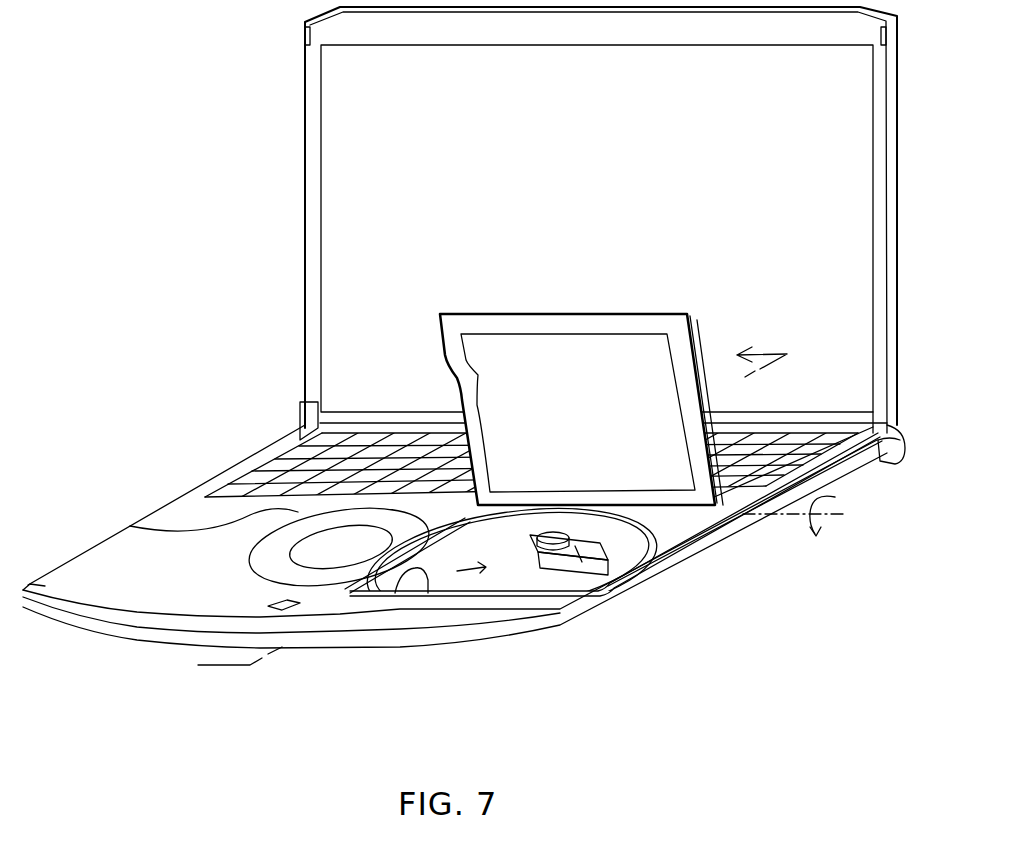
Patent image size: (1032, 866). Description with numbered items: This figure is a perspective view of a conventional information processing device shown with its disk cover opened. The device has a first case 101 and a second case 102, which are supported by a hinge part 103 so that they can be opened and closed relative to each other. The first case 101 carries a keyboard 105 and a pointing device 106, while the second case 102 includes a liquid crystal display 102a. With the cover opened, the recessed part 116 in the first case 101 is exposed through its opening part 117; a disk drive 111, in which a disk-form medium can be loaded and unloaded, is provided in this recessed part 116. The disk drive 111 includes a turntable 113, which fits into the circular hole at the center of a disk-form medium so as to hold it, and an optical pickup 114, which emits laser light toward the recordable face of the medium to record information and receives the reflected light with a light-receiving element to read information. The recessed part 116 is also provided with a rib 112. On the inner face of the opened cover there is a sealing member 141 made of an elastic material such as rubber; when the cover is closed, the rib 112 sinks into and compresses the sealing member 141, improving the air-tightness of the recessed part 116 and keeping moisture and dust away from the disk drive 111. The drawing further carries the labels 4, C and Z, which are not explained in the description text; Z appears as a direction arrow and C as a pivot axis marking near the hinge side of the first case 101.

The tablet / display unit 4 is at (697, 333).
The first case 101 is at (740, 540).
The second case 102 is at (300, 208).
The liquid crystal display 102a is at (345, 143).
The hinge part 103 is at (905, 452).
The keyboard 105 is at (265, 468).
The pointing device 106 is at (318, 553).
The disk drive 111 is at (620, 547).
The rib 112 is at (410, 582).
The turntable 113 is at (527, 553).
The optical pickup 114 is at (557, 566).
The recessed part 116 is at (465, 583).
The opening part 117 is at (697, 540).
The sealing member 141 is at (690, 382).
The rotation axis C is at (845, 514).
The direction Z is at (483, 511).